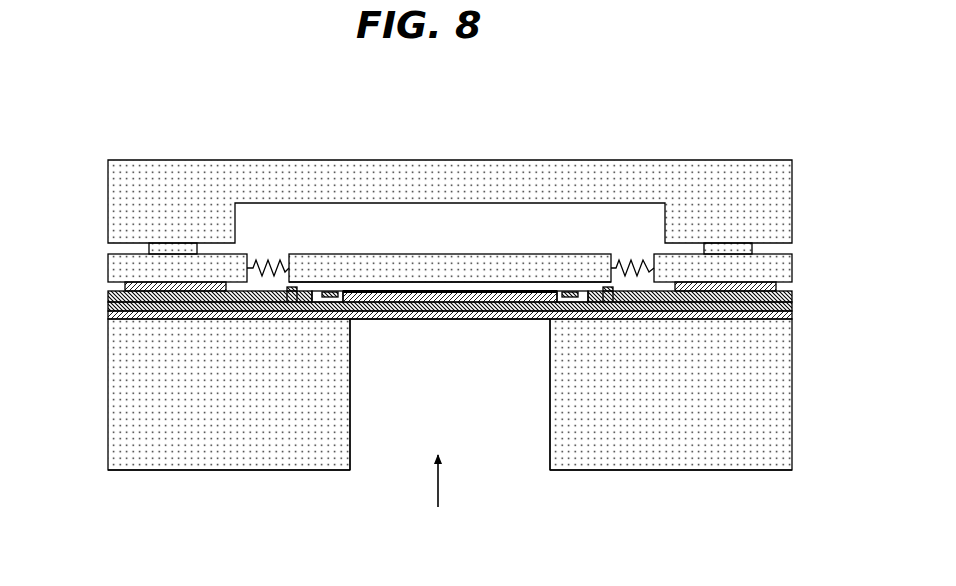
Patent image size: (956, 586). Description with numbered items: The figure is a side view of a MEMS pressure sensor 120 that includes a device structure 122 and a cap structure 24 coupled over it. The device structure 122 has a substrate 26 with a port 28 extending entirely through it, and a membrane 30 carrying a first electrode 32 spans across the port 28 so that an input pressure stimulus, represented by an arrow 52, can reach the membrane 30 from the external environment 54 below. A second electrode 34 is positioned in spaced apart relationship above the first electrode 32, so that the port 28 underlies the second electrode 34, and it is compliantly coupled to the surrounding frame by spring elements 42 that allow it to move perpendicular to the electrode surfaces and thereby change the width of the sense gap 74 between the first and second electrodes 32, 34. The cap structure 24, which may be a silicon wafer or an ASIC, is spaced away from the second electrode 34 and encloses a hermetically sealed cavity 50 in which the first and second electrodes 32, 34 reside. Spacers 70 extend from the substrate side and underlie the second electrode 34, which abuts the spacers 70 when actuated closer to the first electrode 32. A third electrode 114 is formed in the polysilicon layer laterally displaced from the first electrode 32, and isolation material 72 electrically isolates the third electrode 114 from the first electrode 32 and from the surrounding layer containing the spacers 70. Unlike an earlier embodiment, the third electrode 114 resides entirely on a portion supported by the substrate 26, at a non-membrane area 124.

The cap structure 24 is at (102, 242).
The substrate 26 is at (145, 462).
The port 28 is at (466, 384).
The membrane 30 is at (413, 320).
The first electrode 32 is at (418, 293).
The second electrode 34 is at (454, 268).
The spring elements 42 is at (289, 268).
The cavity 50 is at (516, 242).
The arrow 52 is at (438, 490).
The environment 54 is at (409, 566).
The spacers 70 is at (283, 297).
The isolation material 72 is at (310, 300).
The sense gap 74 is at (393, 288).
The third electrode 114 is at (320, 300).
The pressure sensor 120 is at (793, 532).
The device structure 122 is at (108, 253).
The non-membrane area 124 is at (328, 290).